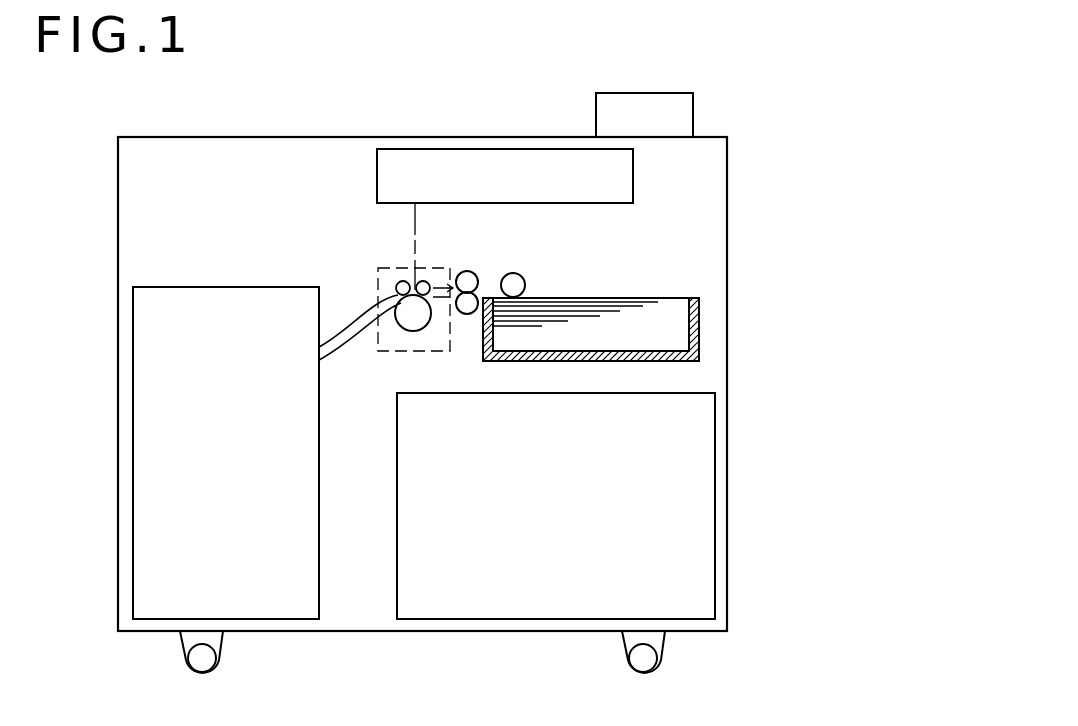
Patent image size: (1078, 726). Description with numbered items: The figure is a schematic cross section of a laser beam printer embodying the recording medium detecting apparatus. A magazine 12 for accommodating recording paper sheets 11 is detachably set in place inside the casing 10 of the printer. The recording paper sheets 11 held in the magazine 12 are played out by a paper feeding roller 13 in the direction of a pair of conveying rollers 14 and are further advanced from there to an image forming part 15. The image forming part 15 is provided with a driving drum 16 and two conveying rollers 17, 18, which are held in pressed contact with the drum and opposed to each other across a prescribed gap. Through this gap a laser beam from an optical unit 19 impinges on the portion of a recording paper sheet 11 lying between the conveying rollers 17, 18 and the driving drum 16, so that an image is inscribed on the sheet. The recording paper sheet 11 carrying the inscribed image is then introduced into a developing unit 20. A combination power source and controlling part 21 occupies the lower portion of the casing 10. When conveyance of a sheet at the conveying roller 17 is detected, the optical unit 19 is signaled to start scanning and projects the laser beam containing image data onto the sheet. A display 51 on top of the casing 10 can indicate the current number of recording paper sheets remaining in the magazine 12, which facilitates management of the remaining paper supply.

The casing 10 is at (727, 378).
The recording paper sheets 11 is at (577, 298).
The magazine 12 is at (699, 326).
The paper feeding roller 13 is at (513, 273).
The pair of conveying rollers 14 is at (470, 271).
The image forming part 15 is at (368, 260).
The driving drum 16 is at (413, 315).
The conveying roller 17 is at (430, 280).
The conveying roller 18 is at (402, 280).
The optical unit 19 is at (504, 149).
The developing unit 20 is at (232, 287).
The combination power source and controlling part 21 is at (715, 497).
The display 51 is at (643, 90).